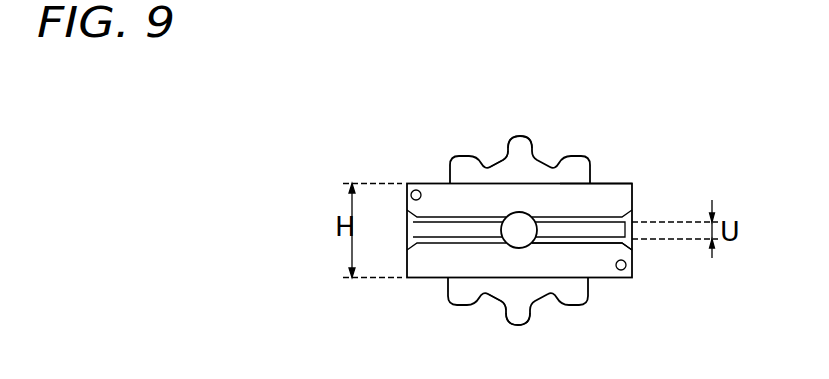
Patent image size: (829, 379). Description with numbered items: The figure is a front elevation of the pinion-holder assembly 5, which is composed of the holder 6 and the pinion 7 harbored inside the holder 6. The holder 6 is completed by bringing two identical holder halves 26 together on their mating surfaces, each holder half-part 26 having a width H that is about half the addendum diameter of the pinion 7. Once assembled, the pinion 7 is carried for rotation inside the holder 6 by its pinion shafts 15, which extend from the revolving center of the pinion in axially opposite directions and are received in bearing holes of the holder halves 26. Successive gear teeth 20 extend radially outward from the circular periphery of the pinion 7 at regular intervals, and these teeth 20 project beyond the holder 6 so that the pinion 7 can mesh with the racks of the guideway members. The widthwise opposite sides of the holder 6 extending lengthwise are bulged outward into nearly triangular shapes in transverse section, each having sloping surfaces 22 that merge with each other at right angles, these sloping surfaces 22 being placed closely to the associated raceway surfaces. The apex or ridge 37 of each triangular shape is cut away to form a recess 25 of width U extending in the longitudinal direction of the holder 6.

The pinion-holder assembly 5 is at (583, 152).
The holder 6 is at (438, 200).
The pinion 7 is at (505, 172).
The pinion shafts 15 is at (527, 238).
The gear teeth 20 is at (525, 148).
The sloping surfaces 22 is at (607, 198).
The recess 25 is at (610, 232).
The holder half-part 26 is at (580, 203).
The apex or ridge 37 is at (590, 242).